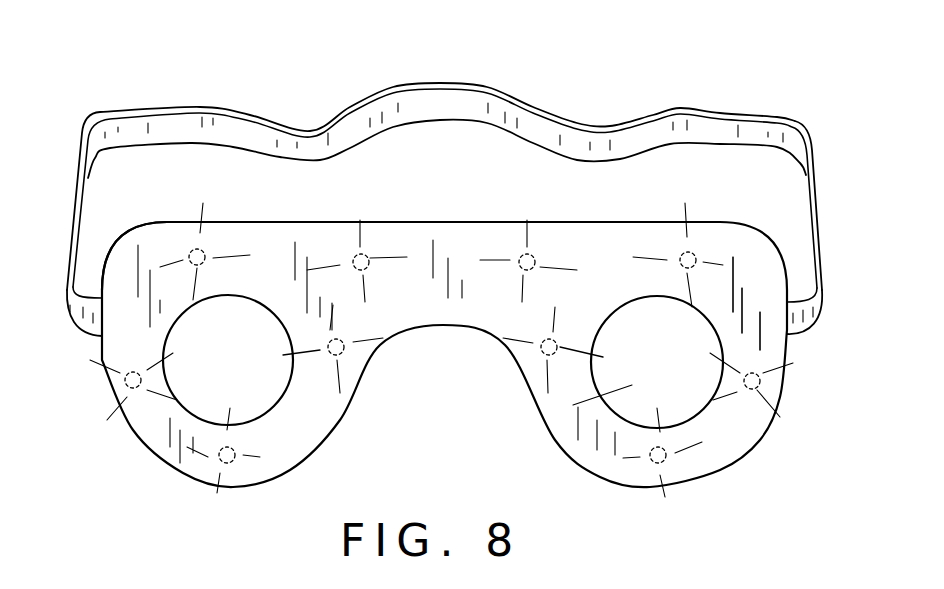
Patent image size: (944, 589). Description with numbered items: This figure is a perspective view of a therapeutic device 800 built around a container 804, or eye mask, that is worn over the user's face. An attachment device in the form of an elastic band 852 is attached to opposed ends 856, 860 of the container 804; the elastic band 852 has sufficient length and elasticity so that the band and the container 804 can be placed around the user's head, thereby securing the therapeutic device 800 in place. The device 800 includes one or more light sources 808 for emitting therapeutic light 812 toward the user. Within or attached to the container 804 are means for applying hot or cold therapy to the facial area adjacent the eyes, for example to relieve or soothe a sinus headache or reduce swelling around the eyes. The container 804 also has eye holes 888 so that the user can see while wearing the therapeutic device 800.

The therapeutic device 800 is at (170, 60).
The elastic band 852 is at (730, 108).
The container 804 is at (652, 222).
The opposed end 856 is at (118, 245).
The opposed end 860 is at (770, 347).
The therapeutic light 812 is at (780, 417).
The light source 808 is at (122, 382).
The eye hole 888 is at (262, 383).